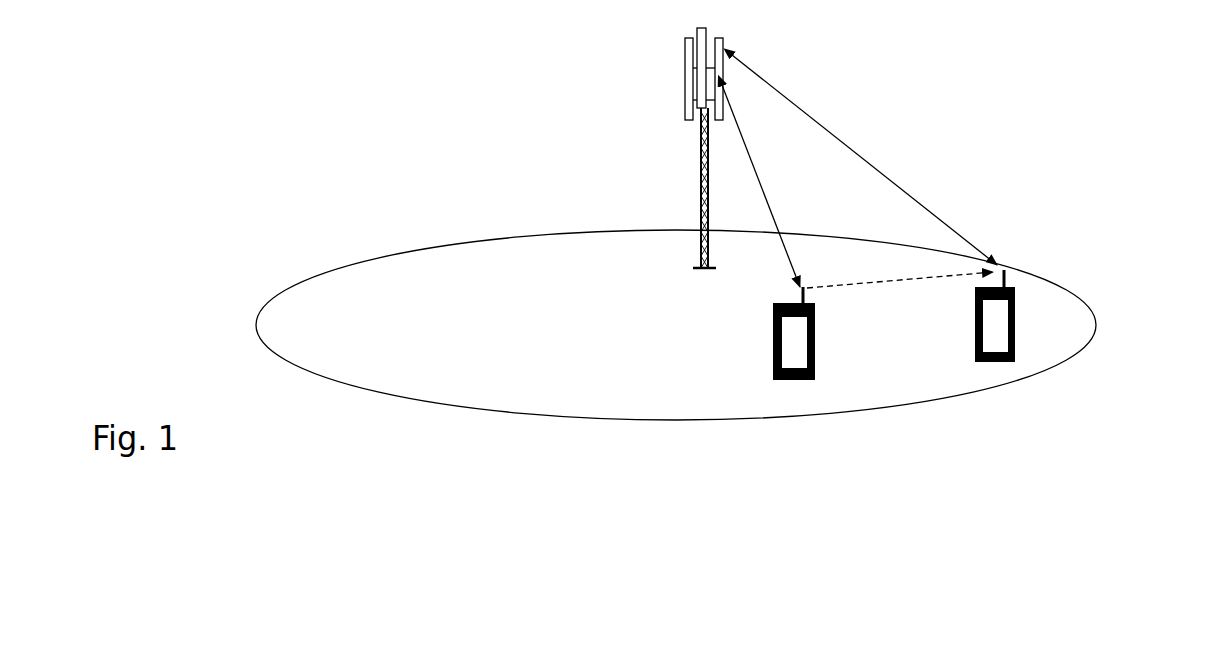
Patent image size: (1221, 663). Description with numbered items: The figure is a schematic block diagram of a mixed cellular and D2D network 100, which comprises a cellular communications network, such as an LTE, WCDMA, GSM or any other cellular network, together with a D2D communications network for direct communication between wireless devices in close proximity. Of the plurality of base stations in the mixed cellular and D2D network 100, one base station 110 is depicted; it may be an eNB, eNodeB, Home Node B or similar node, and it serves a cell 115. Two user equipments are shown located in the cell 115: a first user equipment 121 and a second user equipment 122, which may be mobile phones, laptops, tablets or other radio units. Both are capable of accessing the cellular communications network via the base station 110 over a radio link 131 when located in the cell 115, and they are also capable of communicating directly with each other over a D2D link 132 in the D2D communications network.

The mixed cellular and D2D network 100 is at (1045, 422).
The base station 110 is at (700, 245).
The cell 115 is at (450, 248).
The first user equipment 121 is at (773, 338).
The second user equipment 122 is at (973, 318).
The radio link 131 is at (745, 140).
The D2D link 132 is at (923, 275).